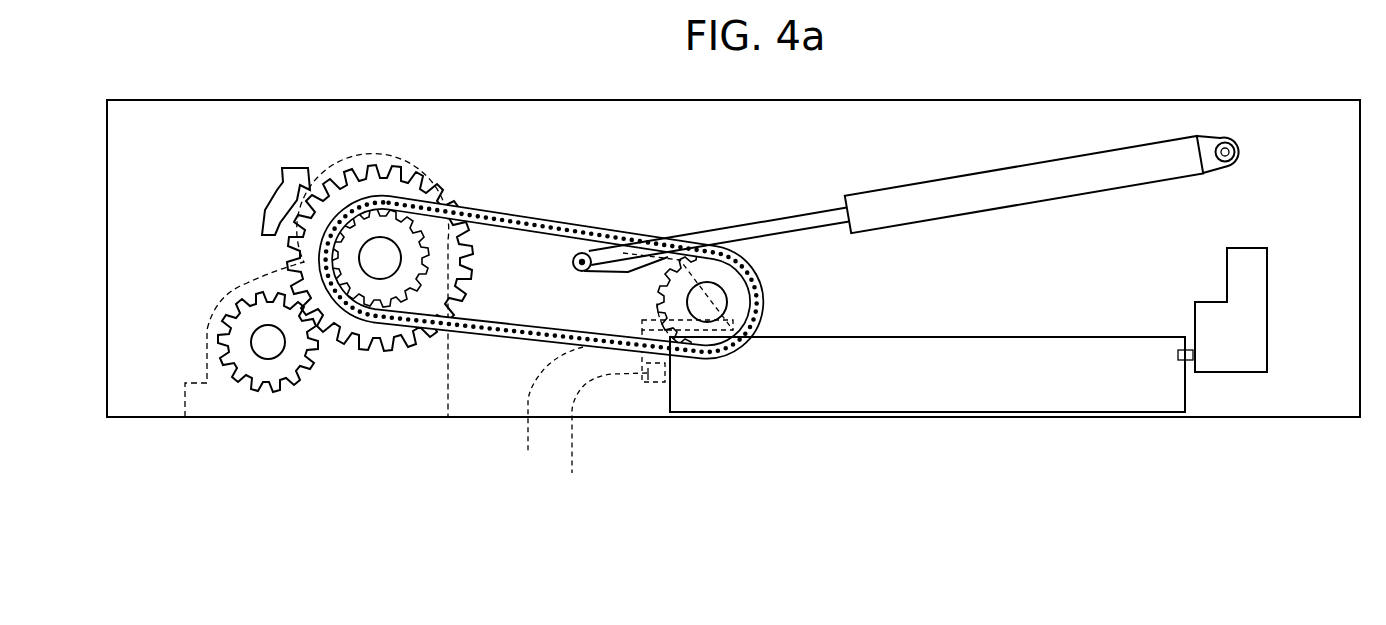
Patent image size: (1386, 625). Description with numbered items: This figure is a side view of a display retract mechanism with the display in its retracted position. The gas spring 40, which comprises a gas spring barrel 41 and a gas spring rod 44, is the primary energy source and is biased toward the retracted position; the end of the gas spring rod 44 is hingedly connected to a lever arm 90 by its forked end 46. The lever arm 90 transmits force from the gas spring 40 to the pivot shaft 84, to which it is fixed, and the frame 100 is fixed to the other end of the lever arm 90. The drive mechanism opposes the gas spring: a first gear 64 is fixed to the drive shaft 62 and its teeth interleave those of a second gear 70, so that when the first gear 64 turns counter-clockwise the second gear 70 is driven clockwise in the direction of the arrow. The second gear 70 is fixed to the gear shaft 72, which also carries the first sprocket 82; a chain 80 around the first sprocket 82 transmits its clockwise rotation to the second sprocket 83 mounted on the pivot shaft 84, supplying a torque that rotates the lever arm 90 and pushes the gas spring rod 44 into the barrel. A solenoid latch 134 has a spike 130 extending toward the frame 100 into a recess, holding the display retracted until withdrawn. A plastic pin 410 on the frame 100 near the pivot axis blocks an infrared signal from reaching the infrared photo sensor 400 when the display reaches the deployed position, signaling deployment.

The gas spring 40 is at (914, 158).
The gas spring barrel 41 is at (933, 200).
The gas spring rod 44 is at (747, 233).
The forked end 46 is at (588, 252).
The drive shaft 62 is at (270, 347).
The first gear 64 is at (280, 368).
The second gear 70 is at (383, 165).
The gear shaft 72 is at (380, 265).
The chain 80 is at (541, 222).
The first sprocket 82 is at (413, 240).
The second sprocket 83 is at (763, 291).
The pivot shaft 84 is at (707, 305).
The lever arm 90 is at (647, 268).
The frame 100 is at (1172, 393).
The spike 130 is at (1192, 347).
The solenoid latch 134 is at (1248, 268).
The infrared photo sensor 400 is at (538, 417).
The plastic pin 410 is at (596, 437).